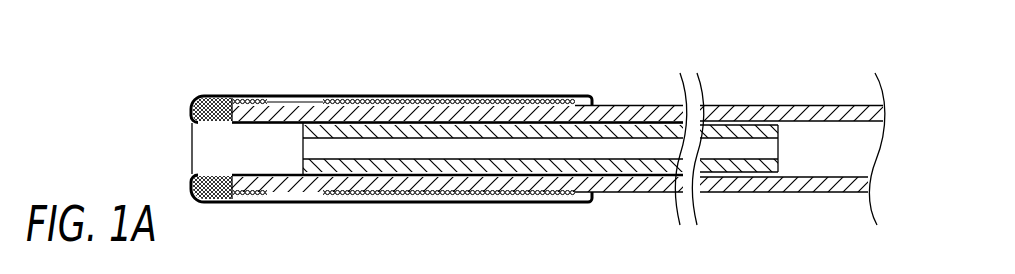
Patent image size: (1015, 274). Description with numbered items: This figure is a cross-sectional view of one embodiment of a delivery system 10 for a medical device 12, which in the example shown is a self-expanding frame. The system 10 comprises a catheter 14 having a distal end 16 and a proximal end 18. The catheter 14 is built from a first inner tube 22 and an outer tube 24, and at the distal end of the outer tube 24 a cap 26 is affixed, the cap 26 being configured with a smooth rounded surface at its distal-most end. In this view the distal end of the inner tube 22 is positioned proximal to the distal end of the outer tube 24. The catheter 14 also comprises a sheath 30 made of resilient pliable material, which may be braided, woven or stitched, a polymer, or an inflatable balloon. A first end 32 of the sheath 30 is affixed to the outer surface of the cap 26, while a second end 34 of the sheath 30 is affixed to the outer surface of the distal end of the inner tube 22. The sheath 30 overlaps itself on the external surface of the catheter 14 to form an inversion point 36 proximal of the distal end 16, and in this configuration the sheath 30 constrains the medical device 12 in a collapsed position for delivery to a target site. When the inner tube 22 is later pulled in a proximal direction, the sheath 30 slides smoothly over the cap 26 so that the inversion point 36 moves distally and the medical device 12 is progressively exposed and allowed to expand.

The delivery system 10 is at (584, 136).
The medical device 12 is at (533, 199).
The catheter 14 is at (630, 97).
The distal end 16 is at (233, 156).
The proximal end 18 is at (859, 158).
The first inner tube 22 is at (735, 140).
The outer tube 24 is at (763, 105).
The cap 26 is at (209, 95).
The sheath 30 is at (403, 203).
The first end 32 is at (248, 97).
The second end 34 is at (290, 97).
The inversion point 36 is at (592, 203).